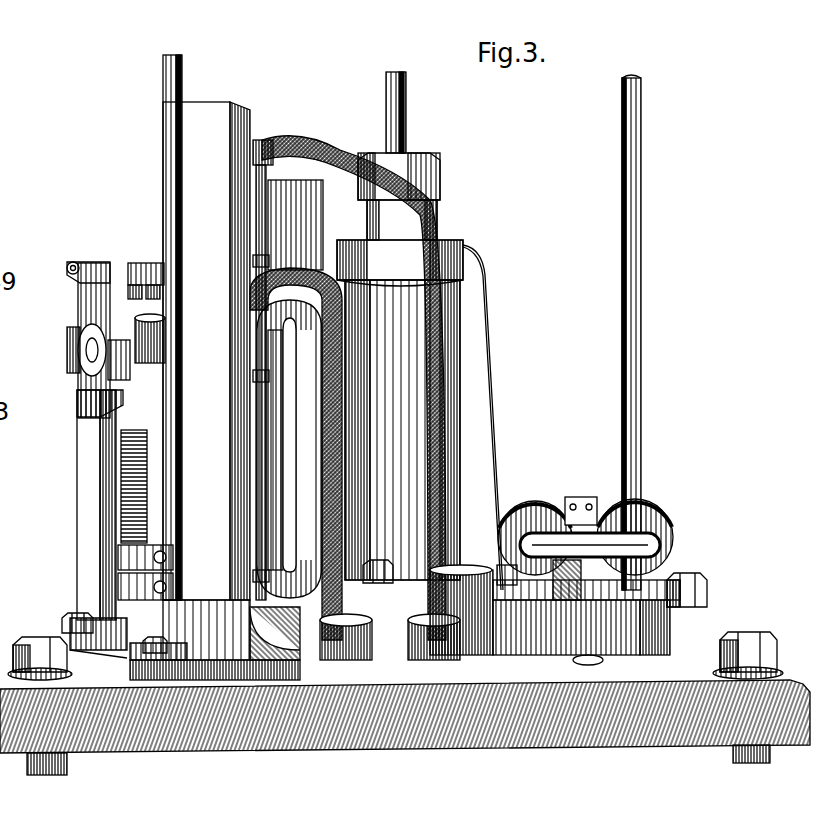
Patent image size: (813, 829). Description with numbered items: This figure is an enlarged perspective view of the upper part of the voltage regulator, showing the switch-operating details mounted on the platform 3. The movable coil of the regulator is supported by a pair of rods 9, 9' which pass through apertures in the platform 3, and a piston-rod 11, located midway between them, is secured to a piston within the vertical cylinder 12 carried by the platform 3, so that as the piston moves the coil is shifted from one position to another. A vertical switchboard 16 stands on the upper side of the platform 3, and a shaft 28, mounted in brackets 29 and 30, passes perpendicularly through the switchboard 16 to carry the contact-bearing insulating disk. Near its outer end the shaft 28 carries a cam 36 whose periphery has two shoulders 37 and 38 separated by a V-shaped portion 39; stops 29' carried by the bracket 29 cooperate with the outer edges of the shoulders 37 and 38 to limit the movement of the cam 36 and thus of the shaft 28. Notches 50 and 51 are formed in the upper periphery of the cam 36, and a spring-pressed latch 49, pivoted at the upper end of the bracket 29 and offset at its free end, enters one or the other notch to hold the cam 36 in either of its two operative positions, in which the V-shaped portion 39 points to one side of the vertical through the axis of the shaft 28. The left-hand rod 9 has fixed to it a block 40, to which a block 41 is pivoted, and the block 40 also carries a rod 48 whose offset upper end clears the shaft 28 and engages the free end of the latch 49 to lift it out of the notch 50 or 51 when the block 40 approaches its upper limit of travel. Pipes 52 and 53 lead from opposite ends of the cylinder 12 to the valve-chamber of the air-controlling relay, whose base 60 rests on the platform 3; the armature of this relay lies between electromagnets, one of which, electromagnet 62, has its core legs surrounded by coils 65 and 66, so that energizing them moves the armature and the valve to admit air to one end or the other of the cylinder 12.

The platform 3 is at (707, 587).
The rod 9 is at (187, 327).
The rod 9' is at (649, 332).
The piston-rod 11 is at (403, 118).
The vertical cylinder 12 is at (460, 353).
The vertical switchboard 16 is at (250, 137).
The shaft 28 is at (167, 350).
The bracket 29 is at (77, 524).
The stops 29' is at (73, 408).
The bracket 30 is at (312, 480).
The cam 36 is at (107, 300).
The shoulder 37 is at (113, 340).
The shoulder 38 is at (40, 360).
The V-shaped portion 39 is at (110, 370).
The block 40 is at (143, 570).
The block 41 is at (157, 555).
The rod 48 is at (150, 497).
The spring-pressed latch 49 is at (152, 300).
The notch 50 is at (133, 273).
The notch 51 is at (153, 282).
The pipe 52 is at (498, 428).
The pipe 53 is at (505, 572).
The base 60 is at (570, 633).
The electromagnet 62 is at (627, 535).
The coil 65 is at (640, 502).
The coil 66 is at (540, 498).